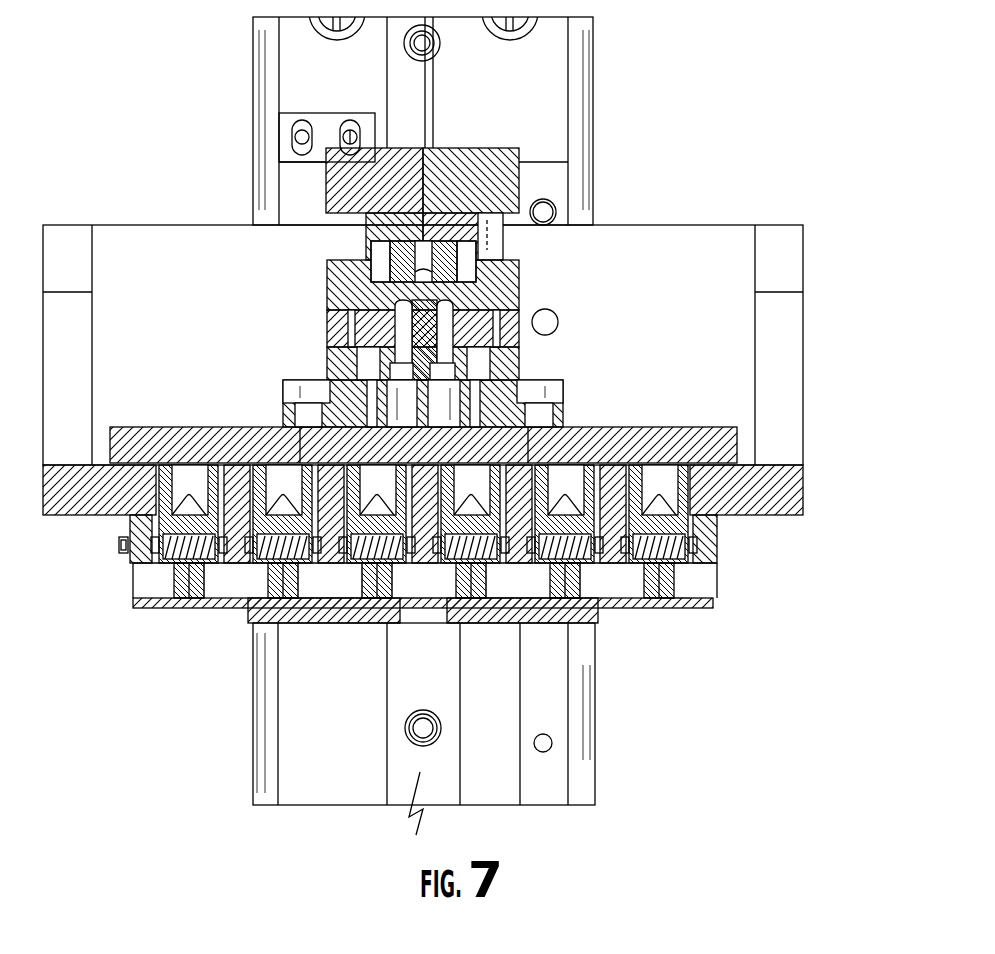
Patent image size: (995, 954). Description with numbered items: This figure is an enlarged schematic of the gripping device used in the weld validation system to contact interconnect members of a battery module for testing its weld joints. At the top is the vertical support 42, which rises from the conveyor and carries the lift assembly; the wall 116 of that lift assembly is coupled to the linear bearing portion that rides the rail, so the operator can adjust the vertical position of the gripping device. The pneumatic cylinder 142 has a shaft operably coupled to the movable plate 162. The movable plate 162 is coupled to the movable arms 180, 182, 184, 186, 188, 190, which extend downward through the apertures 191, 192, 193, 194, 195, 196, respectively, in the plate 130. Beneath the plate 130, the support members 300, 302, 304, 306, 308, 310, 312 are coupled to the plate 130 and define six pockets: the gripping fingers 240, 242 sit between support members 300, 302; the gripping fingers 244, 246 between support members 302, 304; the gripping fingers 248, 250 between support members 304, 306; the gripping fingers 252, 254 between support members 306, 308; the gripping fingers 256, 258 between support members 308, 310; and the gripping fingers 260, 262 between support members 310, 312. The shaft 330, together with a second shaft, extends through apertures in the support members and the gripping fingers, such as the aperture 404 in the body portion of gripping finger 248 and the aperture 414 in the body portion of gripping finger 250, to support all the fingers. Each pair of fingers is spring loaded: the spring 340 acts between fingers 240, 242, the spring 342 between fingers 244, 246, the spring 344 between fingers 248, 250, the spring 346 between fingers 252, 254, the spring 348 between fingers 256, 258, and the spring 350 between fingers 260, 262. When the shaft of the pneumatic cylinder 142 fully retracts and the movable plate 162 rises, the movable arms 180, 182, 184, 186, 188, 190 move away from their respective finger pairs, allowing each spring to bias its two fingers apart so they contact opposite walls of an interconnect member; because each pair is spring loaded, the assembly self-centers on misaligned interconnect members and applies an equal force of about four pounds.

The vertical support 42 is at (593, 72).
The second pneumatic cylinder 142 is at (497, 187).
The support wall 116 is at (703, 235).
The movable plate 162 is at (727, 448).
The plate 130 is at (787, 505).
The movable arm 180 is at (423, 445).
The movable arm 182 is at (265, 445).
The movable arm 184 is at (360, 445).
The movable arm 186 is at (453, 445).
The movable arm 188 is at (547, 445).
The movable arm 190 is at (641, 445).
The aperture 191 is at (130, 445).
The aperture 192 is at (223, 445).
The aperture 193 is at (318, 445).
The aperture 194 is at (412, 445).
The aperture 195 is at (507, 445).
The aperture 196 is at (600, 445).
The spring 340 is at (133, 466).
The spring 342 is at (227, 466).
The spring 344 is at (321, 466).
The spring 346 is at (415, 466).
The spring 348 is at (509, 466).
The spring 350 is at (603, 466).
The support member 300 is at (133, 565).
The support member 302 is at (229, 563).
The support member 304 is at (316, 561).
The support member 306 is at (392, 561).
The support member 308 is at (508, 561).
The support member 310 is at (600, 561).
The support member 312 is at (707, 568).
The shaft 330 is at (119, 542).
The gripping finger 240 is at (172, 580).
The gripping finger 242 is at (192, 598).
The gripping finger 244 is at (267, 623).
The gripping finger 246 is at (292, 598).
The gripping finger 248 is at (365, 598).
The gripping finger 250 is at (385, 625).
The gripping finger 252 is at (458, 623).
The gripping finger 254 is at (487, 600).
The gripping finger 256 is at (553, 623).
The gripping finger 258 is at (587, 600).
The gripping finger 260 is at (650, 598).
The gripping finger 262 is at (668, 598).
The aperture 404 is at (340, 561).
The aperture 414 is at (393, 598).